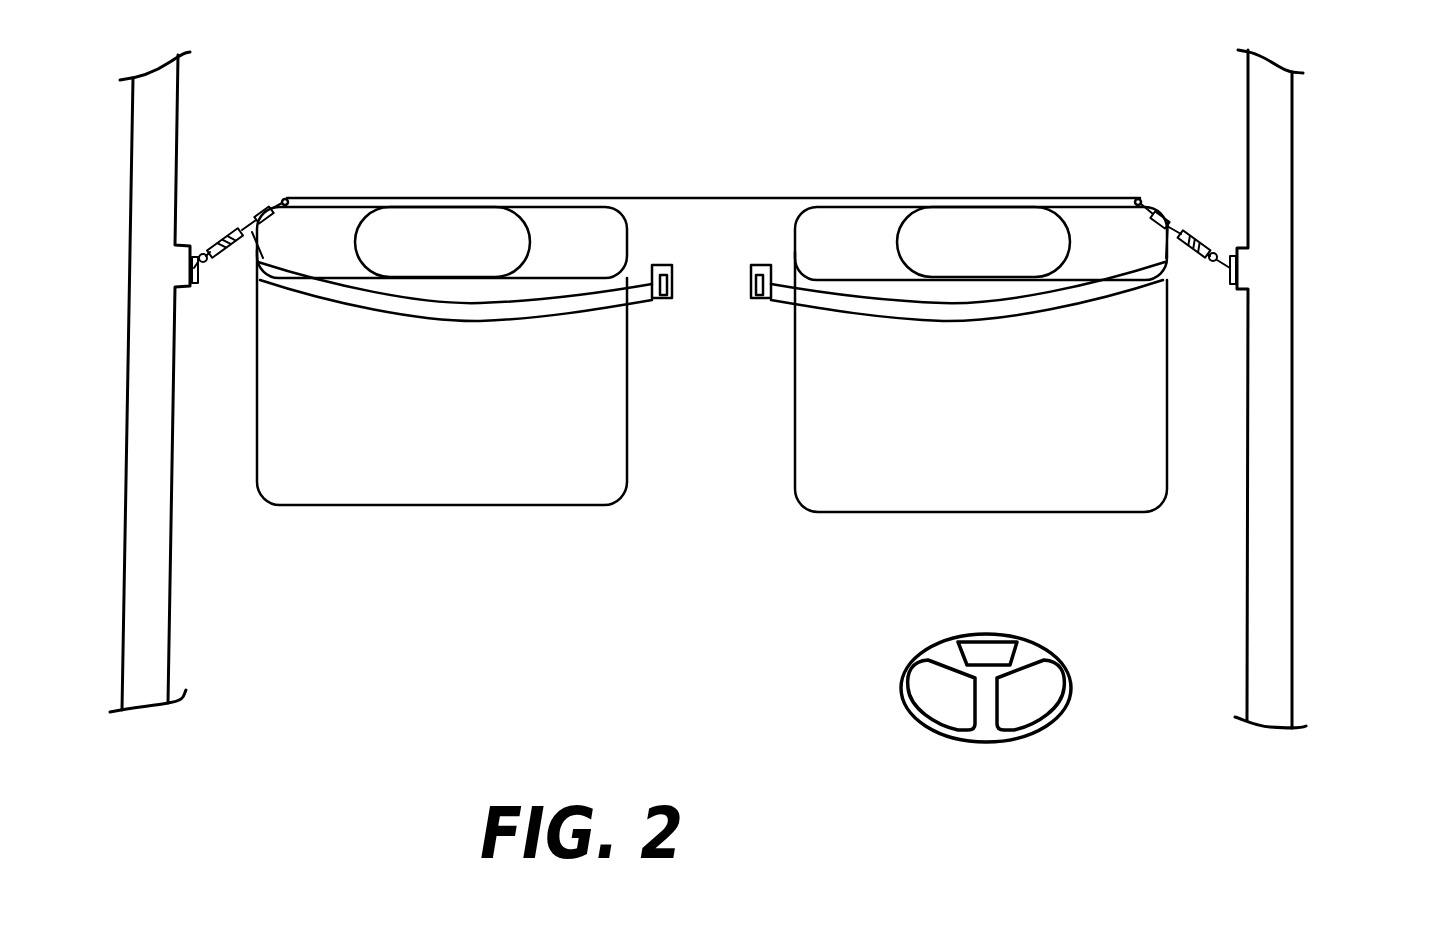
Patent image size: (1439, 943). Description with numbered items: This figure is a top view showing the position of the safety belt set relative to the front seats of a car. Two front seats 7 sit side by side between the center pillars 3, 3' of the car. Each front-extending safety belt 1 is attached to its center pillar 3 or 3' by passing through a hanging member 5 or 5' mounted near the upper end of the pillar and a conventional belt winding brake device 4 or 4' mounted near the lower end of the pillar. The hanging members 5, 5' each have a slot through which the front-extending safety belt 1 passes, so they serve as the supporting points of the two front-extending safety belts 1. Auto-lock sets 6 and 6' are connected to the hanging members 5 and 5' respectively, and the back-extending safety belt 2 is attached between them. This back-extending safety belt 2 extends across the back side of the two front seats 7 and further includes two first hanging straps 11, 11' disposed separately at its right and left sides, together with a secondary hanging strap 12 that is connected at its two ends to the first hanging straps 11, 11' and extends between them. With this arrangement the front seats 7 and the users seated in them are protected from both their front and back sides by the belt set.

The front-extending safety belt 1 is at (610, 303).
The back-extending safety belt 2 is at (585, 198).
The center pillar 3 is at (123, 382).
The center pillar 3' is at (1334, 389).
The belt winding brake device 4 is at (213, 317).
The belt winding brake device 4' is at (1211, 335).
The hanging member 5 is at (223, 302).
The hanging member 5' is at (1223, 181).
The auto-lock set 6 is at (219, 184).
The auto-lock set 6' is at (1181, 165).
The front seat 7 is at (463, 213).
The first hanging strap 11 is at (262, 157).
The first hanging strap 11' is at (1138, 157).
The secondary hanging strap 12 is at (760, 197).